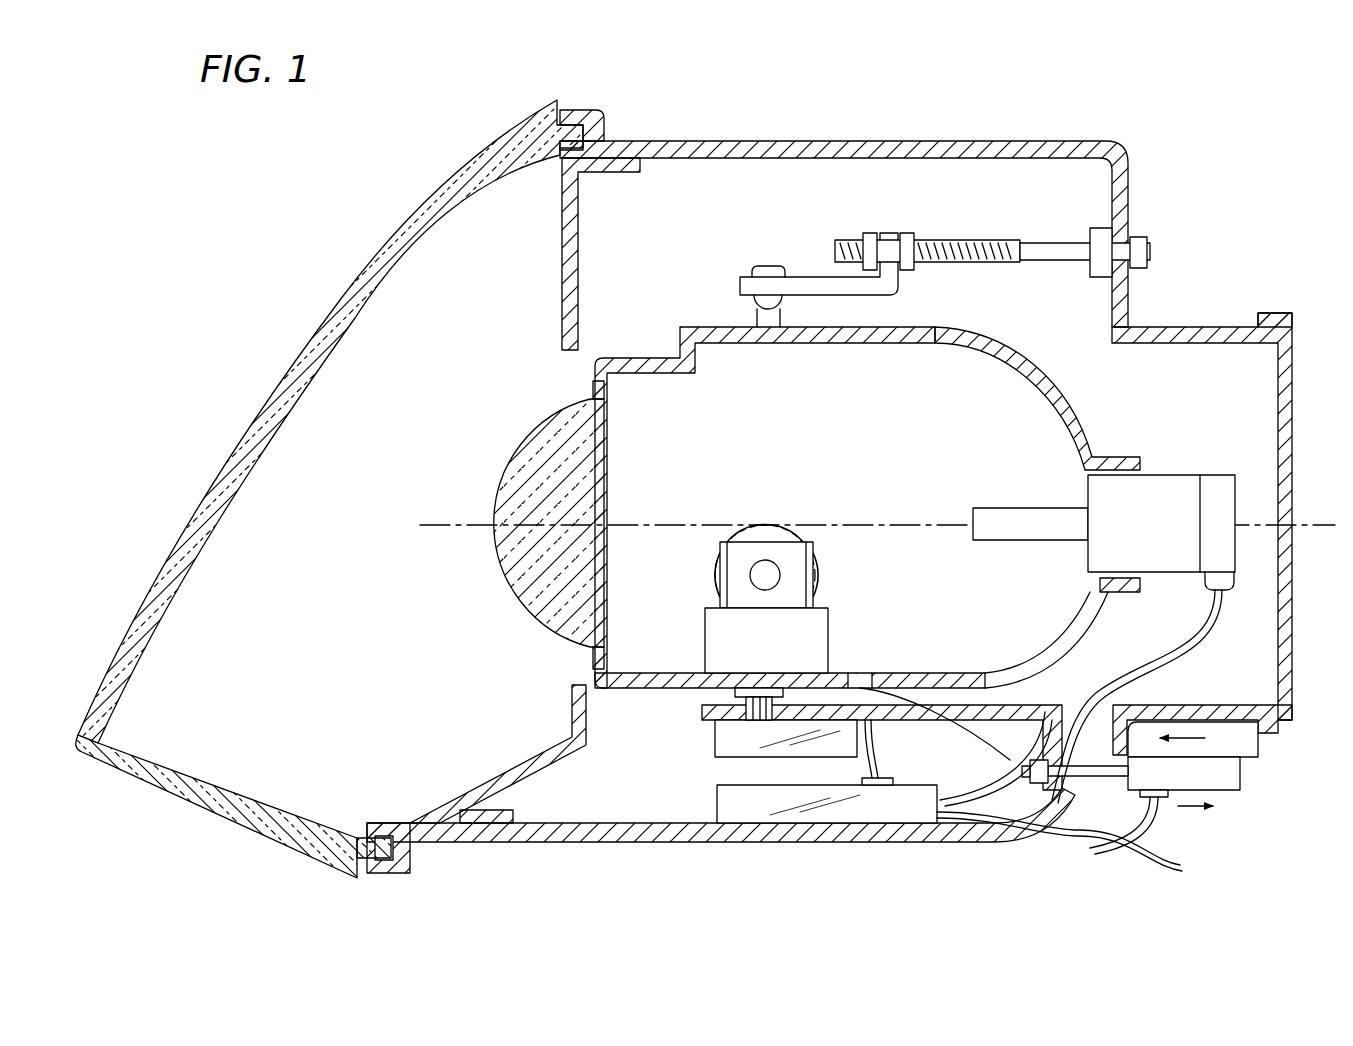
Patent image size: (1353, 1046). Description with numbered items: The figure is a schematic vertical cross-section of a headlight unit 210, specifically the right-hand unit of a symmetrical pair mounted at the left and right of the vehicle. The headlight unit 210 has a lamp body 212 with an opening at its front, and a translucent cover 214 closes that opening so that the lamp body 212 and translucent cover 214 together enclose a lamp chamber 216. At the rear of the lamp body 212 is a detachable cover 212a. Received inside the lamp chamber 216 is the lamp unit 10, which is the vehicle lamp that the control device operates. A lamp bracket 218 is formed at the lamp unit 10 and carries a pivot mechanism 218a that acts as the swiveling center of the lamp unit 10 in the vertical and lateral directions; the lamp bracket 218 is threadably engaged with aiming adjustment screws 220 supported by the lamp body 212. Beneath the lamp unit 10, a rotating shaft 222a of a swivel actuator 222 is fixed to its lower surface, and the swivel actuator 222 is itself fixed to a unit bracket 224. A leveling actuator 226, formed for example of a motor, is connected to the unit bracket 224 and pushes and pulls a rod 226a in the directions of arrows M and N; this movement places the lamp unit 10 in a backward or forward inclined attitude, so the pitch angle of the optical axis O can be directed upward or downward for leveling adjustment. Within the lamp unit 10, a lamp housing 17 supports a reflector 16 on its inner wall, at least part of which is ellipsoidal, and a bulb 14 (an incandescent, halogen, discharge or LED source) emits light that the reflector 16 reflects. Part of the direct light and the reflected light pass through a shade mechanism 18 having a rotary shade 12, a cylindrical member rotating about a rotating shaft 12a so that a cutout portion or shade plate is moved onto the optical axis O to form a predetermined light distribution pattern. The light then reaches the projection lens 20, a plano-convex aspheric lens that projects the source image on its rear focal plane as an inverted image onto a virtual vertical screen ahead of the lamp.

The headlight unit 210 is at (950, 141).
The lamp body 212 is at (795, 141).
The detachable cover 212a is at (1275, 315).
The translucent cover 214 is at (385, 251).
The lamp chamber 216 is at (506, 302).
The lamp bracket 218 is at (820, 283).
The pivot mechanism 218a is at (763, 300).
The aiming adjustment screw 220 is at (1048, 252).
The swivel actuator 222 is at (730, 737).
The rotating shaft 222a is at (742, 695).
The unit bracket 224 is at (912, 712).
The leveling actuator 226 is at (1230, 775).
The rod 226a is at (1078, 768).
The lamp unit 10 is at (650, 356).
The rotary shade 12 is at (778, 532).
The rotating shaft 12a is at (770, 576).
The bulb 14 is at (1015, 515).
The reflector 16 is at (935, 343).
The lamp housing 17 is at (1030, 375).
The shade mechanism 18 is at (765, 521).
The projection lens 20 is at (522, 440).
The optical axis O is at (425, 530).
The arrow M is at (1196, 739).
The arrow N is at (1210, 807).